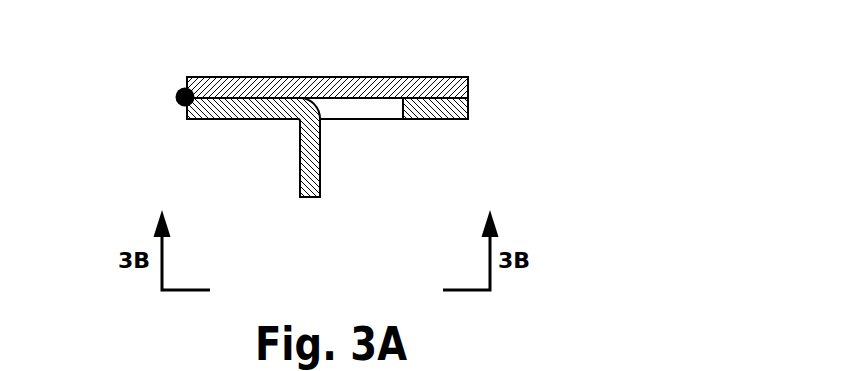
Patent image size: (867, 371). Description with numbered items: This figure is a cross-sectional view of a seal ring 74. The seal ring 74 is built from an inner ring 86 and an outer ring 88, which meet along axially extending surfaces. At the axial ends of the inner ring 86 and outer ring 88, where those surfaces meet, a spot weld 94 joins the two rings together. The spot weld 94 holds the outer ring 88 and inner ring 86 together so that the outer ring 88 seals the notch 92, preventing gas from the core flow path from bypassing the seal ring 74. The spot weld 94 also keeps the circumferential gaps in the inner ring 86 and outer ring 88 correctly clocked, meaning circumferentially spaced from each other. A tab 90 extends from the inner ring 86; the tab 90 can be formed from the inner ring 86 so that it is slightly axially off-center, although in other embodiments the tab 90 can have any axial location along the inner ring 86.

The seal ring 74 is at (290, 104).
The inner ring 86 is at (458, 107).
The outer ring 88 is at (458, 92).
The tab 90 is at (310, 183).
The notch 92 is at (358, 110).
The spot weld 94 is at (177, 103).